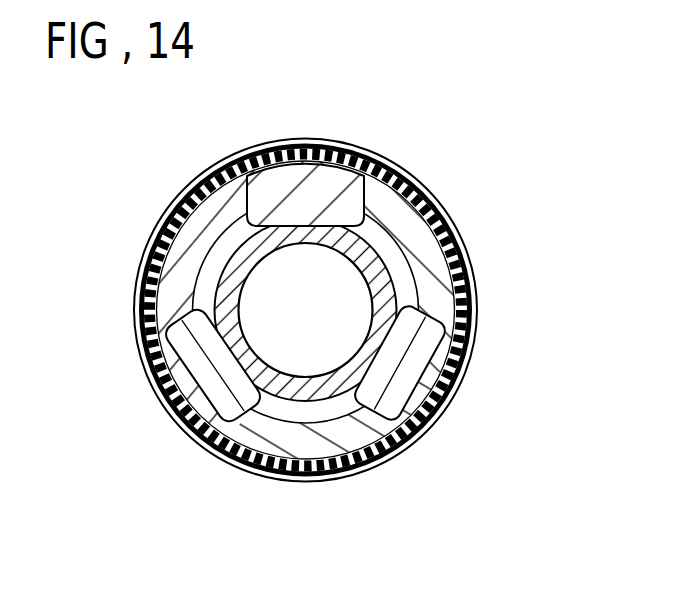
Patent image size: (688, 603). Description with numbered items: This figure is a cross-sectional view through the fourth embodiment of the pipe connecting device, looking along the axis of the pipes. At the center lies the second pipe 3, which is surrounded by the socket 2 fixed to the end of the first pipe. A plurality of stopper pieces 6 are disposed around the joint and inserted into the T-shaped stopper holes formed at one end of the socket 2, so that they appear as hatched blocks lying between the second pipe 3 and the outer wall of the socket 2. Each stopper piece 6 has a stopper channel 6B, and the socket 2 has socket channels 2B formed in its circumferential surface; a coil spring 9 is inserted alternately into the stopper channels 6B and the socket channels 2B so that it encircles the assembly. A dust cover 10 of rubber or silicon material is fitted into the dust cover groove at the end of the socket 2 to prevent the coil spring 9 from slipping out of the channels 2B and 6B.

The socket 2 is at (348, 442).
The socket channel 2B is at (263, 478).
The second pipe 3 is at (377, 282).
The stopper piece 6 is at (366, 168).
The stopper channel 6B is at (287, 150).
The coil spring 9 is at (384, 310).
The dust cover 10 is at (470, 349).